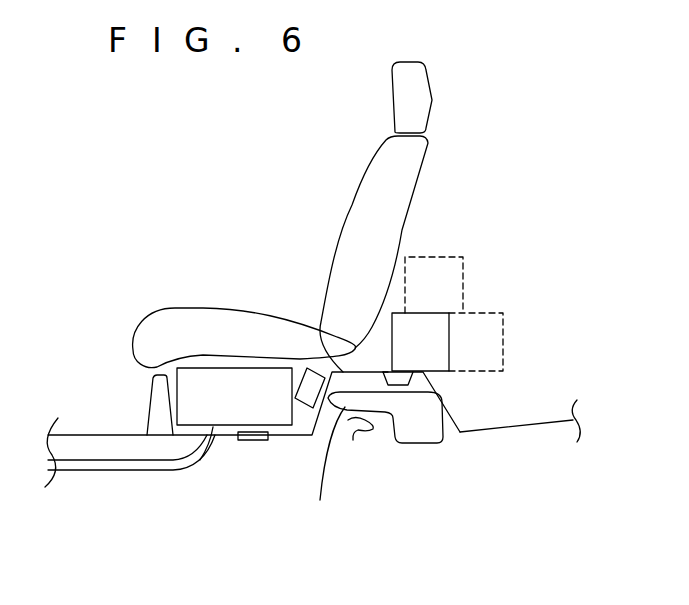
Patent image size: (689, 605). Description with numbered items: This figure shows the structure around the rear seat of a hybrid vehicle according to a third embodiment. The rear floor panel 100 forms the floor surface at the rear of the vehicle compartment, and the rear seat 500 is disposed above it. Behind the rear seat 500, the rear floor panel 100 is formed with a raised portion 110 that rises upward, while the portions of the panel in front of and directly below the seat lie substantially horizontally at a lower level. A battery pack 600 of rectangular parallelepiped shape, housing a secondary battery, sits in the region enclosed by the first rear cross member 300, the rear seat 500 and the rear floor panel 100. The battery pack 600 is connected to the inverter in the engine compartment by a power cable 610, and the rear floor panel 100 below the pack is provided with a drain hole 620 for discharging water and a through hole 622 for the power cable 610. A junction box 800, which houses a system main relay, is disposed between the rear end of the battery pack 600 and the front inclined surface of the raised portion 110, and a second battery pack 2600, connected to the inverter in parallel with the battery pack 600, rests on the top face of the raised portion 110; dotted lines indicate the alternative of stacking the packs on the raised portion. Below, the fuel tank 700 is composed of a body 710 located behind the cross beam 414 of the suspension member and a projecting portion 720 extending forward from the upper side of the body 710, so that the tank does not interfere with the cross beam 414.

The rear floor panel 100 is at (523, 427).
The raised portion 110 is at (317, 330).
The first rear cross member 300 is at (147, 397).
The cross beam 414 is at (350, 442).
The rear seat 500 is at (163, 308).
The battery pack 600 is at (208, 368).
The power cable 610 is at (92, 475).
The drain hole 620 is at (253, 442).
The through hole 622 is at (212, 440).
The fuel tank 700 is at (400, 457).
The body 710 is at (423, 445).
The projecting portion 720 is at (320, 500).
The junction box 800 is at (305, 368).
The battery pack 2600 is at (437, 257).